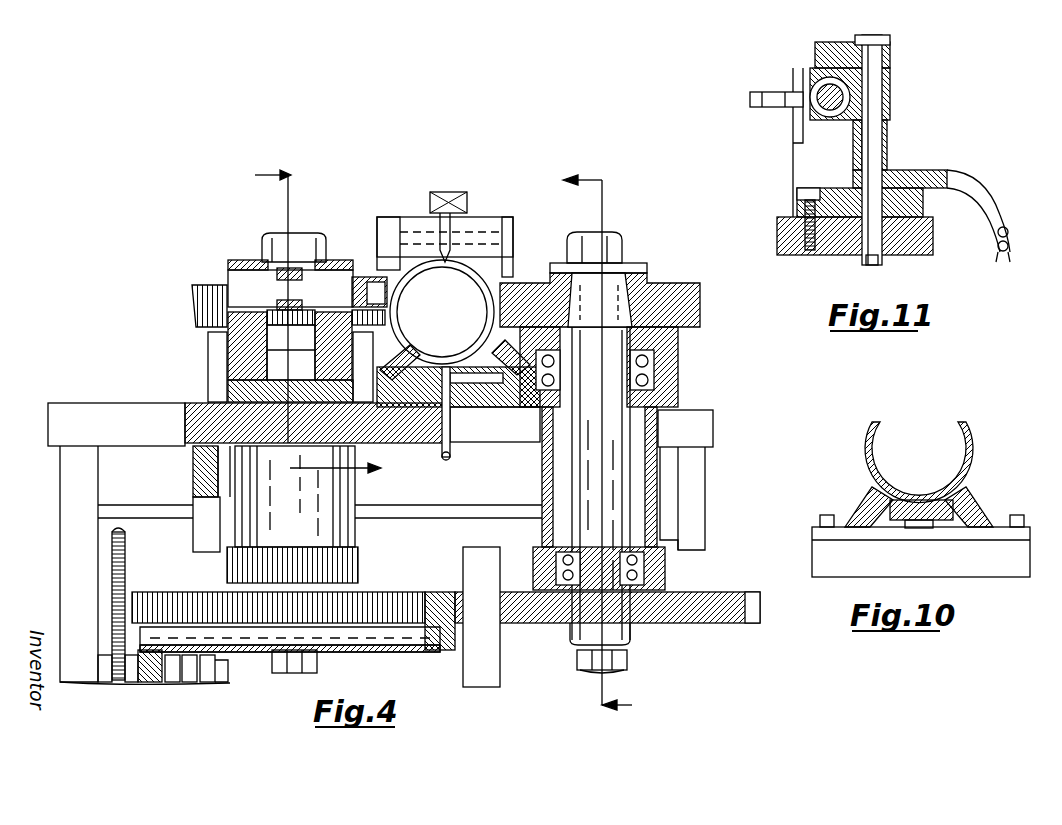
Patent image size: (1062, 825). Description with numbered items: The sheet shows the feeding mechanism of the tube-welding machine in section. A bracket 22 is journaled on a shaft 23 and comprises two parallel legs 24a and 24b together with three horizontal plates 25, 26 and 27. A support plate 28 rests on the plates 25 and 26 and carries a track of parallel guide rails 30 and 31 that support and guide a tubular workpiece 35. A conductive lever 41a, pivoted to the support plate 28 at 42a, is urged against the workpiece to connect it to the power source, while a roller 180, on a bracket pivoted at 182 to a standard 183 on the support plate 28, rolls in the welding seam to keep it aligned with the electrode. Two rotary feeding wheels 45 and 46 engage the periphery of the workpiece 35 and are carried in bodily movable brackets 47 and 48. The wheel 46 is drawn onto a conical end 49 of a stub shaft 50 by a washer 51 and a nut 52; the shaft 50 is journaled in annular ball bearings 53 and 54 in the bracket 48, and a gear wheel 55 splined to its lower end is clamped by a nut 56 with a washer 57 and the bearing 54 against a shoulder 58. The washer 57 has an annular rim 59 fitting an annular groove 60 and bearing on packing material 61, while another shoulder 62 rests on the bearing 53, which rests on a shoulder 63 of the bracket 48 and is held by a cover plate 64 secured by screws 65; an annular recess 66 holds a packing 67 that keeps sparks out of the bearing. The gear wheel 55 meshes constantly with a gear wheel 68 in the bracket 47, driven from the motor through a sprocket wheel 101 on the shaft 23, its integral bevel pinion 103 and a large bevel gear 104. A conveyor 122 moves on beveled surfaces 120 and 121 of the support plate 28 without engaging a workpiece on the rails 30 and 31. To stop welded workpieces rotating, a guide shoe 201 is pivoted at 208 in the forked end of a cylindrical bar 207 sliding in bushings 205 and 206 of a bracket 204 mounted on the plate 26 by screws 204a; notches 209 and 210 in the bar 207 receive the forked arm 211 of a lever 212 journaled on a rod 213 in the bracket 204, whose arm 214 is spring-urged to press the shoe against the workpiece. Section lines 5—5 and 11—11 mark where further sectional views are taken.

In FIG. 4, the section line 5- 5 is at (599, 446).
In FIG. 4, the section line 11— 11 is at (315, 325).
In FIG. 4, the bracket 22 is at (500, 657).
In FIG. 4, the shaft 23 is at (210, 676).
In FIG. 4, the leg 24a is at (500, 680).
In FIG. 4, the leg 24b is at (66, 521).
In FIG. 4, the horizontal plate 25 is at (58, 432).
In FIG. 4, the horizontal plate 26 is at (188, 408).
In FIG. 11, the horizontal plate 26 is at (927, 247).
In FIG. 4, the horizontal plate 27 is at (412, 533).
In FIG. 4, the support plate 28 is at (483, 408).
In FIG. 4, the guide rail 30 is at (400, 357).
In FIG. 10, the guide rail 30 is at (855, 510).
In FIG. 4, the guide rail 31 is at (492, 355).
In FIG. 10, the guide rail 31 is at (987, 503).
In FIG. 4, the tubular workpiece 35 is at (410, 293).
In FIG. 10, the tubular workpiece 35 is at (877, 453).
In FIG. 4, the conductive lever 41a is at (457, 456).
In FIG. 4, the pivot 42a is at (440, 440).
In FIG. 4, the rotary wheel 45 is at (200, 288).
In FIG. 4, the rotary wheel 46 is at (690, 284).
In FIG. 4, the bracket 47 is at (215, 373).
In FIG. 4, the bracket 48 is at (680, 378).
In FIG. 4, the conical end 49 is at (647, 283).
In FIG. 4, the stub shaft 50 is at (617, 478).
In FIG. 4, the washer 51 is at (613, 293).
In FIG. 4, the nut 52 is at (603, 240).
In FIG. 4, the annular ball bearing 53 is at (678, 373).
In FIG. 4, the annular ball bearing 54 is at (663, 560).
In FIG. 4, the gear wheel 55 is at (727, 625).
In FIG. 4, the nut 56 is at (590, 672).
In FIG. 4, the washer 57 is at (657, 590).
In FIG. 4, the shoulder 58 is at (597, 547).
In FIG. 4, the annular rim 59 is at (550, 612).
In FIG. 4, the annular groove 60 is at (547, 577).
In FIG. 4, the packing material 61 is at (665, 577).
In FIG. 4, the shoulder 62 is at (663, 290).
In FIG. 4, the shoulder 63 is at (680, 396).
In FIG. 4, the cover plate 64 is at (682, 348).
In FIG. 4, the screws 65 is at (678, 336).
In FIG. 4, the annular recess 66 is at (680, 327).
In FIG. 4, the packing 67 is at (557, 317).
In FIG. 4, the gear wheel 68 is at (402, 612).
In FIG. 4, the sprocket wheel 101 is at (126, 568).
In FIG. 4, the bevel pinion 103 is at (150, 673).
In FIG. 4, the bevel gear 104 is at (235, 645).
In FIG. 10, the beveled surface 120 is at (870, 518).
In FIG. 10, the beveled surface 121 is at (965, 518).
In FIG. 10, the conveyor 122 is at (950, 497).
In FIG. 4, the roller 180 is at (470, 216).
In FIG. 4, the pivot 182 is at (520, 232).
In FIG. 4, the standard 183 is at (387, 278).
In FIG. 4, the guide shoe 201 is at (405, 255).
In FIG. 11, the guide shoe 201 is at (760, 97).
In FIG. 4, the bracket 204 is at (240, 353).
In FIG. 11, the bracket 204 is at (798, 212).
In FIG. 11, the screws 204a is at (808, 195).
In FIG. 4, the bushing 205 is at (232, 262).
In FIG. 4, the bushing 206 is at (328, 262).
In FIG. 4, the cylindrical bar 207 is at (240, 288).
In FIG. 11, the cylindrical bar 207 is at (817, 95).
In FIG. 4, the pivot 208 is at (378, 265).
In FIG. 4, the notch 209 is at (285, 278).
In FIG. 4, the notch 210 is at (282, 298).
In FIG. 4, the forked arm 211 is at (300, 300).
In FIG. 11, the forked arm 211 is at (837, 123).
In FIG. 11, the lever 212 is at (886, 153).
In FIG. 11, the rod 213 is at (872, 132).
In FIG. 11, the arm 214 is at (973, 192).